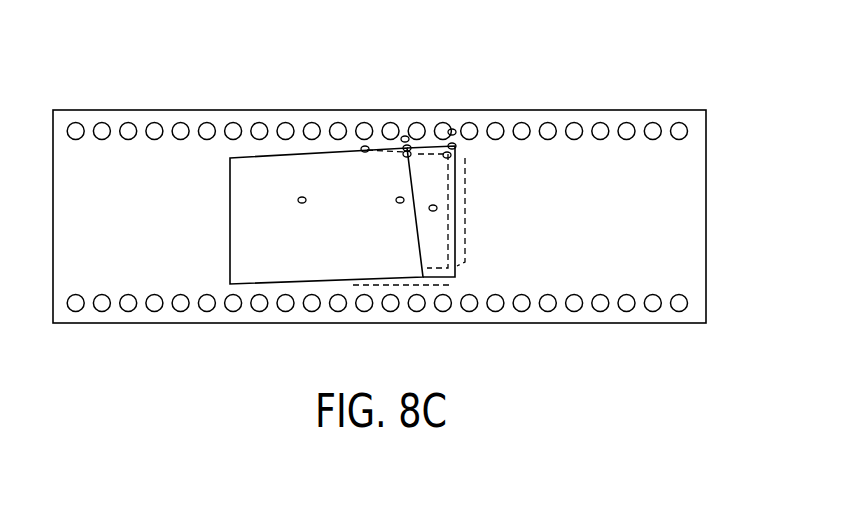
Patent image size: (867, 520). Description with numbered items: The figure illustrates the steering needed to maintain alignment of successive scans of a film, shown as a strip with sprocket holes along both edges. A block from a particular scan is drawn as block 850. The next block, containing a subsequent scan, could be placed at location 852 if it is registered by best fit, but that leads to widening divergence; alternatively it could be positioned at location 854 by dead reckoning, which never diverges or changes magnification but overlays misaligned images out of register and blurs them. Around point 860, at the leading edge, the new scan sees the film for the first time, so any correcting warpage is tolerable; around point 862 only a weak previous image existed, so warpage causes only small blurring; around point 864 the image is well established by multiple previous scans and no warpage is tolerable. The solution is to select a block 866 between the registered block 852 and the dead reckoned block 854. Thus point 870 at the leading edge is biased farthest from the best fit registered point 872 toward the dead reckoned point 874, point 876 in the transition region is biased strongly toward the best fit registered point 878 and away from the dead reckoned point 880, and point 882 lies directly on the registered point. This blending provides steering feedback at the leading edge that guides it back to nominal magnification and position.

The block 850 is at (230, 245).
The best fit registered block location 852 is at (466, 242).
The dead reckoned block location 854 is at (430, 285).
The leading edge point 860 is at (437, 208).
The transition region point 862 is at (404, 200).
The well established region point 864 is at (302, 197).
The selected block 866 is at (466, 240).
The leading edge point 870 is at (454, 144).
The best fit registered point 872 is at (451, 129).
The dead reckoned point 874 is at (450, 154).
The transition region point 876 is at (408, 145).
The best fit registered point 878 is at (403, 137).
The dead reckoned point 880 is at (410, 151).
The registered point 882 is at (365, 146).